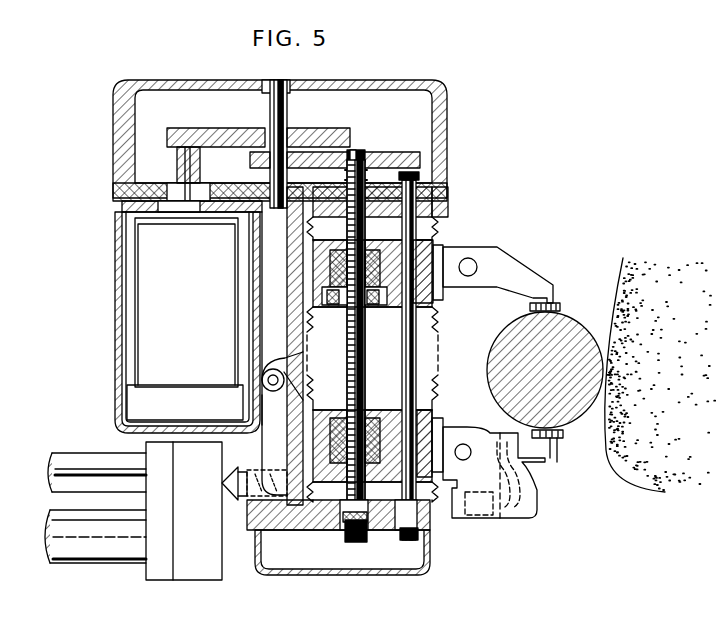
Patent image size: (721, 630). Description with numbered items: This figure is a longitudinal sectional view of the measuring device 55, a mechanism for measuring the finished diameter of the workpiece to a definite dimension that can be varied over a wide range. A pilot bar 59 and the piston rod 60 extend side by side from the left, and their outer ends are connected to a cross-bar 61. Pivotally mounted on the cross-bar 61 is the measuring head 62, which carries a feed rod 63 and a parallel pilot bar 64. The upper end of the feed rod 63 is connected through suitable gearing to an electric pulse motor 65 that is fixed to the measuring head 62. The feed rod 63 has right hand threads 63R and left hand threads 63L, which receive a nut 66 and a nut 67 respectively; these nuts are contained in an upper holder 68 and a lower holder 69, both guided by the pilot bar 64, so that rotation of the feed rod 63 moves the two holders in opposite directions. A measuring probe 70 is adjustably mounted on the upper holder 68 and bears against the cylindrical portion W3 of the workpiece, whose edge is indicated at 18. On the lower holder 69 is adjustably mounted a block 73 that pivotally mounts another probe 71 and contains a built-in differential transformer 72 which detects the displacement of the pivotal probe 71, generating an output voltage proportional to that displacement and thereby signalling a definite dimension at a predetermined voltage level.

The measuring device 55 is at (171, 84).
The measuring head 62 is at (402, 62).
The right hand threads 63R is at (372, 185).
The electric pulse motor 65 is at (140, 253).
The upper holder 68 is at (448, 262).
The measuring probe 70 is at (520, 290).
The cylindrical portion of the workpiece W3 is at (582, 335).
The nut 66 is at (370, 303).
The feed rod 63 is at (347, 352).
The pilot bar 64 is at (412, 358).
The nut 67 is at (362, 416).
The lower holder 69 is at (440, 422).
The pivotal probe 71 is at (546, 460).
The grinding wheel 18 is at (627, 478).
The block 73 is at (460, 500).
The differential transformer 72 is at (486, 512).
The left hand threads 63L is at (338, 507).
The pilot bar 59 is at (110, 462).
The piston rod 60 is at (82, 547).
The cross-bar 61 is at (196, 577).